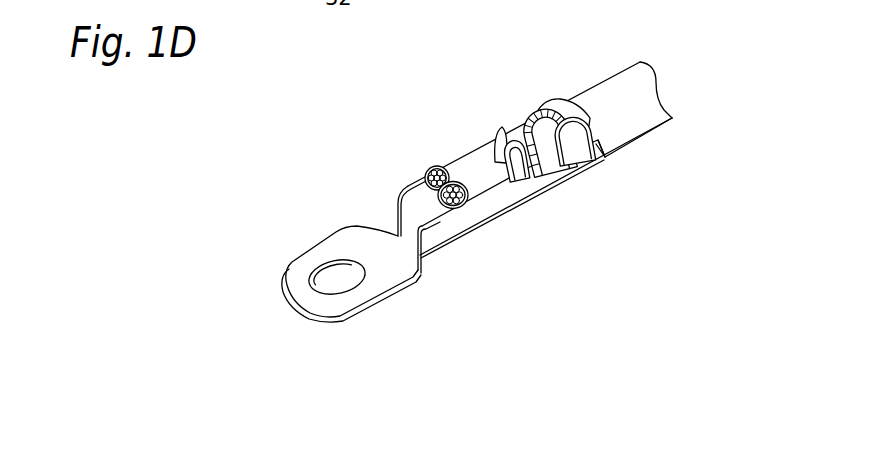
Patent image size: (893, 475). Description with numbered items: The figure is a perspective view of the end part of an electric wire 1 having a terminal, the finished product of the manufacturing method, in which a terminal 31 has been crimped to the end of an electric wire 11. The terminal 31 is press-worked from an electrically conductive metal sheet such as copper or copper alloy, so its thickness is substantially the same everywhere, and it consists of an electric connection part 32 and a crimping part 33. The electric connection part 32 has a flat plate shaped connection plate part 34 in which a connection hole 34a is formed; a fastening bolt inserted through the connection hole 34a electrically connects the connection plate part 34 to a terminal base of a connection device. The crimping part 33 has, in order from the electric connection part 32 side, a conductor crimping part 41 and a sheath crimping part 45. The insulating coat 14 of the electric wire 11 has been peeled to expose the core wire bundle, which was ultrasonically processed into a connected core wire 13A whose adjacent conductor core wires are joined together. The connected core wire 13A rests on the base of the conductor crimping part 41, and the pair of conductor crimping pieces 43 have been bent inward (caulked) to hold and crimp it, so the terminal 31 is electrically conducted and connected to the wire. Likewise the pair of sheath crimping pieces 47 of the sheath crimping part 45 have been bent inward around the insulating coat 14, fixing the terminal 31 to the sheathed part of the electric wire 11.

The electric wire having a terminal 1 is at (340, 133).
The electric wire 11 is at (677, 80).
The connected core wire 13A is at (426, 166).
The insulating coat 14 is at (627, 88).
The terminal 31 is at (461, 272).
The electric connection part 32 is at (328, 325).
The crimping part 33 is at (540, 192).
The connection plate part 34 is at (353, 242).
The connection hole 34a is at (313, 281).
The conductor crimping part 41 is at (503, 205).
The conductor crimping pieces 43 is at (480, 175).
The sheath crimping part 45 is at (607, 150).
The sheath crimping pieces 47 is at (580, 120).